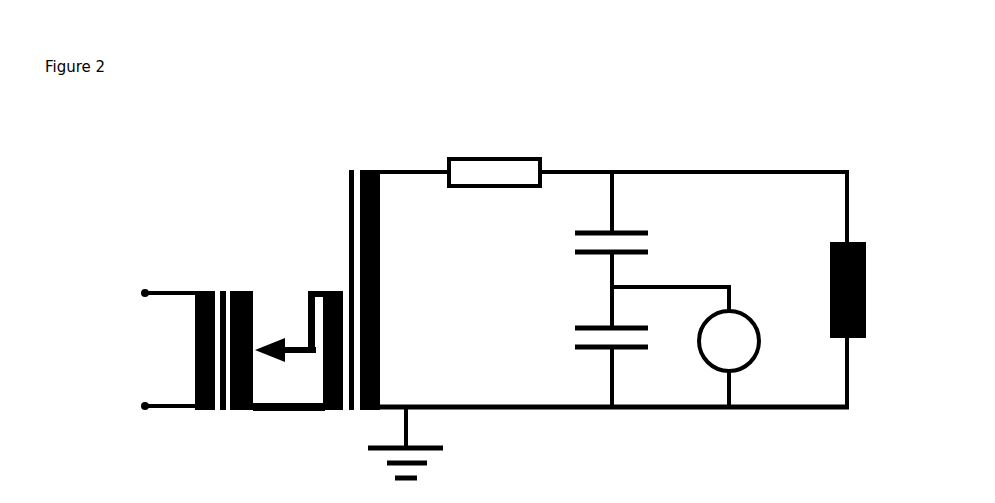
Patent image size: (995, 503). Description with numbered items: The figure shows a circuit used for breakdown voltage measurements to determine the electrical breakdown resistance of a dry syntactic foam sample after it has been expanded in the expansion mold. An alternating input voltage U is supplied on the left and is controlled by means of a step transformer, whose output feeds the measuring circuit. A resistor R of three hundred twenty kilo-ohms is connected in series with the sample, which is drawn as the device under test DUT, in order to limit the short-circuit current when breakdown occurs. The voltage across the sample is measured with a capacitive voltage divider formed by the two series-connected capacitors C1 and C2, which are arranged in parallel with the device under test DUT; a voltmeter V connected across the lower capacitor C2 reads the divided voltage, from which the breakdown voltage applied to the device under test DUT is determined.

The AC supply voltage source U is at (145, 310).
The series resistor R is at (494, 146).
The capacitor of capacitive voltage divider C1 is at (589, 242).
The capacitor of capacitive voltage divider C2 is at (589, 337).
The voltmeter V is at (729, 341).
The device under test DUT is at (895, 290).